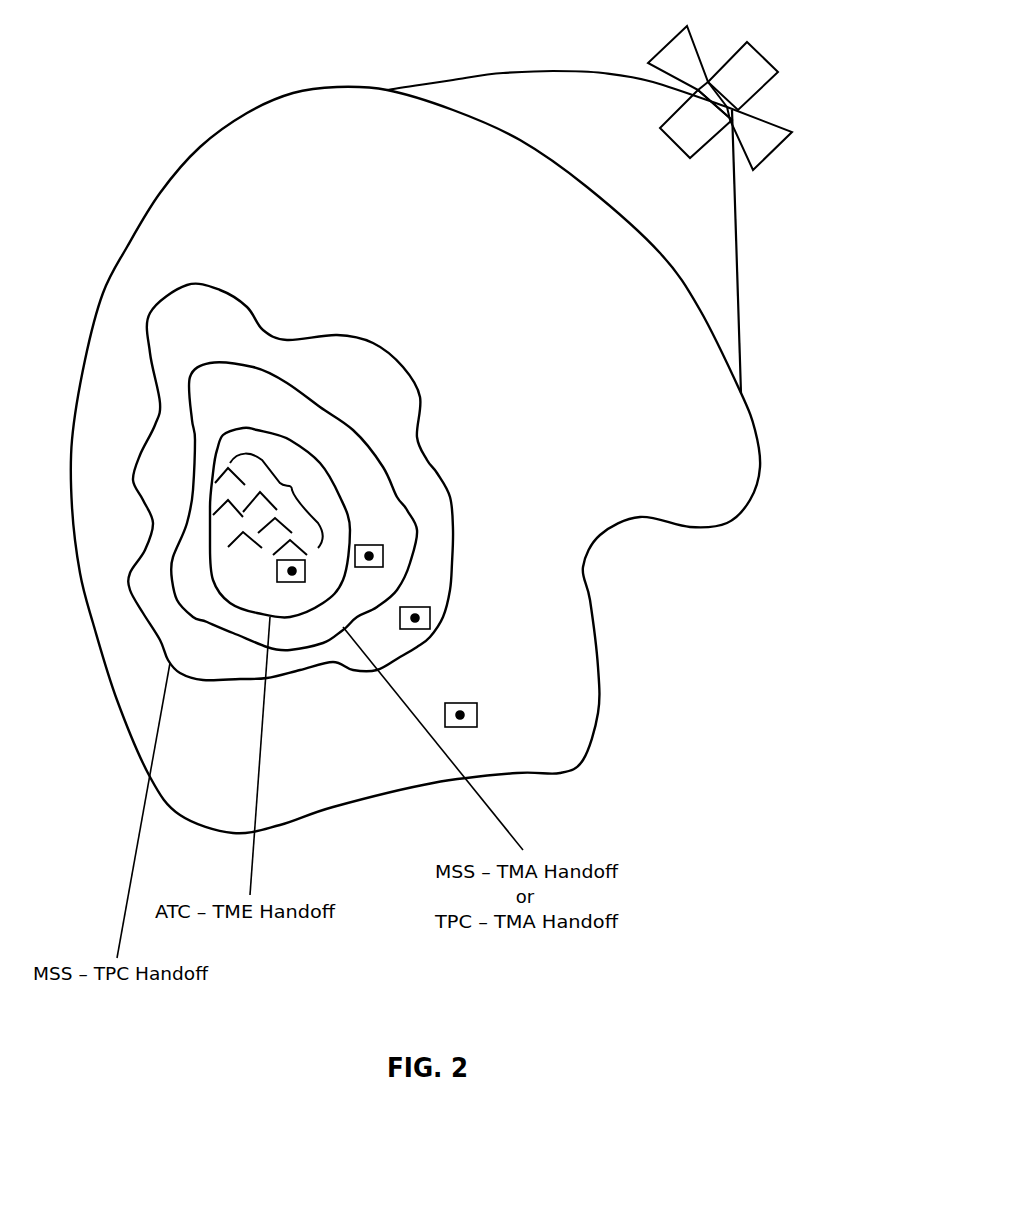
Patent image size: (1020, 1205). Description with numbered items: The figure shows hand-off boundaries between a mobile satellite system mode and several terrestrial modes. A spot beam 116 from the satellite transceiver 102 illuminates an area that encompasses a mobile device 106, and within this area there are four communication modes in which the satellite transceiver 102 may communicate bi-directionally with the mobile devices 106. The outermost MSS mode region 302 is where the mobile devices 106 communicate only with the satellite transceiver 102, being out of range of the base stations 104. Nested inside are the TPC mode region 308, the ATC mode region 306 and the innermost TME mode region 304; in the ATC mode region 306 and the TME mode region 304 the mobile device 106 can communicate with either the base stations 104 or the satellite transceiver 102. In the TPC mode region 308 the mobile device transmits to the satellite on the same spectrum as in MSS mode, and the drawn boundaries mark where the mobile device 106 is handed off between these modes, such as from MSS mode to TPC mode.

The satellite transceiver 102 is at (663, 47).
The base stations 104 is at (293, 486).
The mobile device 106 is at (307, 570).
The spot beam 116 is at (415, 452).
The MSS mode region 302 is at (647, 652).
The TME mode region 304 is at (280, 523).
The ATC mode region 306 is at (294, 506).
The TPC mode region 308 is at (290, 482).